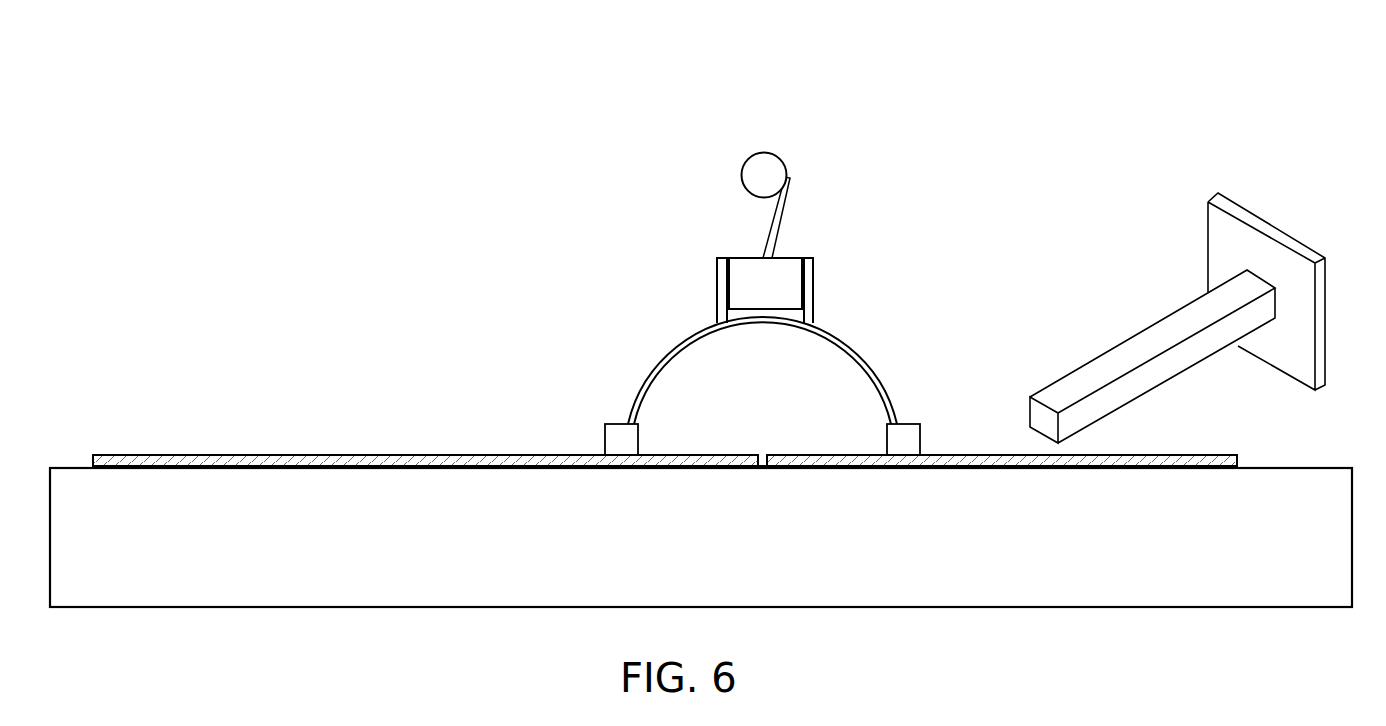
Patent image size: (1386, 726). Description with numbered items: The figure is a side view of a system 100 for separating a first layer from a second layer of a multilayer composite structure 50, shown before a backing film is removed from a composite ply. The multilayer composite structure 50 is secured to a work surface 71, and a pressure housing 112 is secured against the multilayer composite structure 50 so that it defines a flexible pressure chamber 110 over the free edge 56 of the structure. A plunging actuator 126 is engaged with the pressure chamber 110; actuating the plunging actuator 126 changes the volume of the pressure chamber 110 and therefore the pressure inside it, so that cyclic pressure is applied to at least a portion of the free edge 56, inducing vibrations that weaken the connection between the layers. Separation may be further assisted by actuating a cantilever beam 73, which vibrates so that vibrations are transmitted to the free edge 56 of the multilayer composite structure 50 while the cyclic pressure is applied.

The system 100 is at (436, 89).
The pressure chamber 110 is at (762, 379).
The pressure housing 112 is at (762, 328).
The plunging actuator 126 is at (777, 189).
The multilayer composite structure 50 is at (665, 411).
The free edge 56 is at (785, 412).
The work surface 71 is at (701, 586).
The cantilever beam 73 is at (1177, 305).